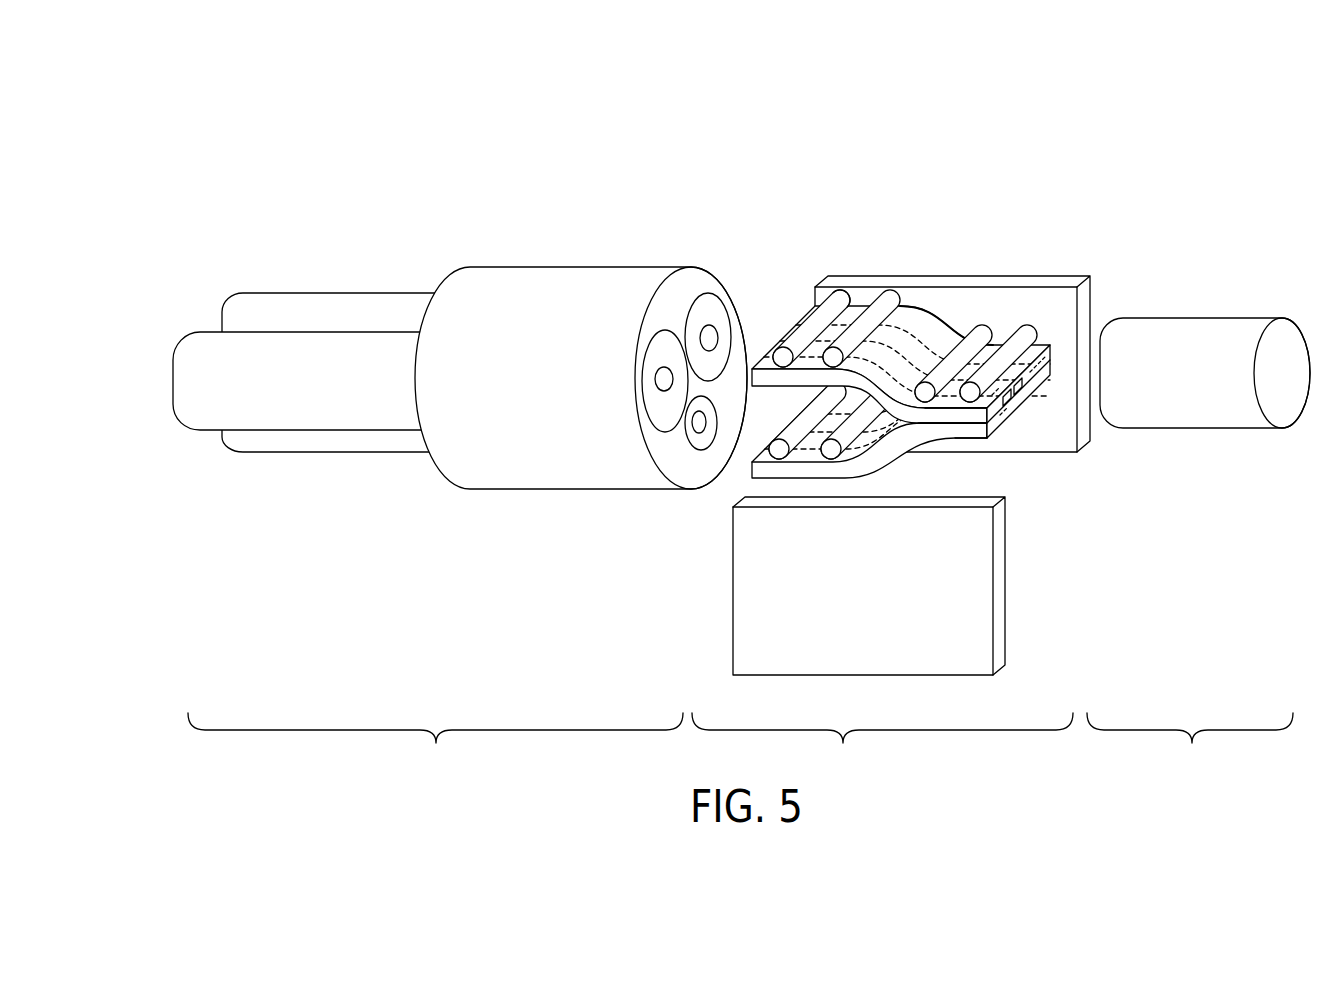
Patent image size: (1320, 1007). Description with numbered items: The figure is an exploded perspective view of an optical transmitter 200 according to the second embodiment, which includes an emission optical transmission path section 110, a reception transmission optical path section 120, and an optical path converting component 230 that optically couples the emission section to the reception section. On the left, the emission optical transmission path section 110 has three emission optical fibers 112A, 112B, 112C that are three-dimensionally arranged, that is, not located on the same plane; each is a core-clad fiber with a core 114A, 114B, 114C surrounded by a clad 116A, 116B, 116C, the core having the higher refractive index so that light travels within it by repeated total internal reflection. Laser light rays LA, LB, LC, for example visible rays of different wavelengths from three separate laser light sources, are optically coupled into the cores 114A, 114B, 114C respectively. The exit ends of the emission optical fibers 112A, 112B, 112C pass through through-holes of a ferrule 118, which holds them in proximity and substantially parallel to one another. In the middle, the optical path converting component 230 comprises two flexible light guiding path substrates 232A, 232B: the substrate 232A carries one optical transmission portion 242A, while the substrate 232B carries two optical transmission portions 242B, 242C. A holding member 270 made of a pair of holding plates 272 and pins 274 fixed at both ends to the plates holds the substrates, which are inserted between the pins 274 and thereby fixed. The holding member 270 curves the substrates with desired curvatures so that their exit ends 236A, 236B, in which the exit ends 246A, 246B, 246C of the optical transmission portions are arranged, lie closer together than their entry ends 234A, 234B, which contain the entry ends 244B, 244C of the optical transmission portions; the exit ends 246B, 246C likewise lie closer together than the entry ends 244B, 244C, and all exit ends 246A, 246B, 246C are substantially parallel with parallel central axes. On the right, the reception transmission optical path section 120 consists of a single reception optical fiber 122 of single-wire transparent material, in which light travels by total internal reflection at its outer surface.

The optical transmitter 200 is at (285, 195).
The emission optical transmission path section 110 is at (435, 749).
The emission optical fiber 112A is at (321, 450).
The emission optical fiber 112B is at (349, 348).
The emission optical fiber 112C is at (257, 305).
The core 114A is at (700, 448).
The core 114B is at (655, 381).
The core 114C is at (711, 332).
The clad 116A is at (693, 442).
The clad 116B is at (660, 413).
The clad 116C is at (697, 323).
The ferrule 118 is at (525, 283).
The reception transmission optical path section 120 is at (1190, 748).
The reception optical fiber 122 is at (1187, 410).
The optical path converting component 230 is at (882, 748).
The flexible light guiding path substrate 232A is at (898, 447).
The flexible light guiding path substrate 232B is at (908, 305).
The entry end 234A is at (763, 478).
The entry end 234B is at (768, 386).
The exit end 236A is at (975, 437).
The exit end 236B is at (957, 417).
The optical transmission portion 242A is at (807, 462).
The optical transmission portion 242B is at (957, 358).
The optical transmission portion 242C is at (917, 362).
The entry end 244B is at (773, 347).
The entry end 244C is at (798, 310).
The exit end 246A is at (1022, 395).
The exit end 246B is at (1016, 398).
The exit end 246C is at (1052, 356).
The holding member 270 is at (926, 434).
The holding plate 272 is at (878, 283).
The pin 274 is at (830, 308).
The laser light ray LA is at (211, 443).
The laser light ray LB is at (161, 383).
The laser light ray LC is at (214, 316).